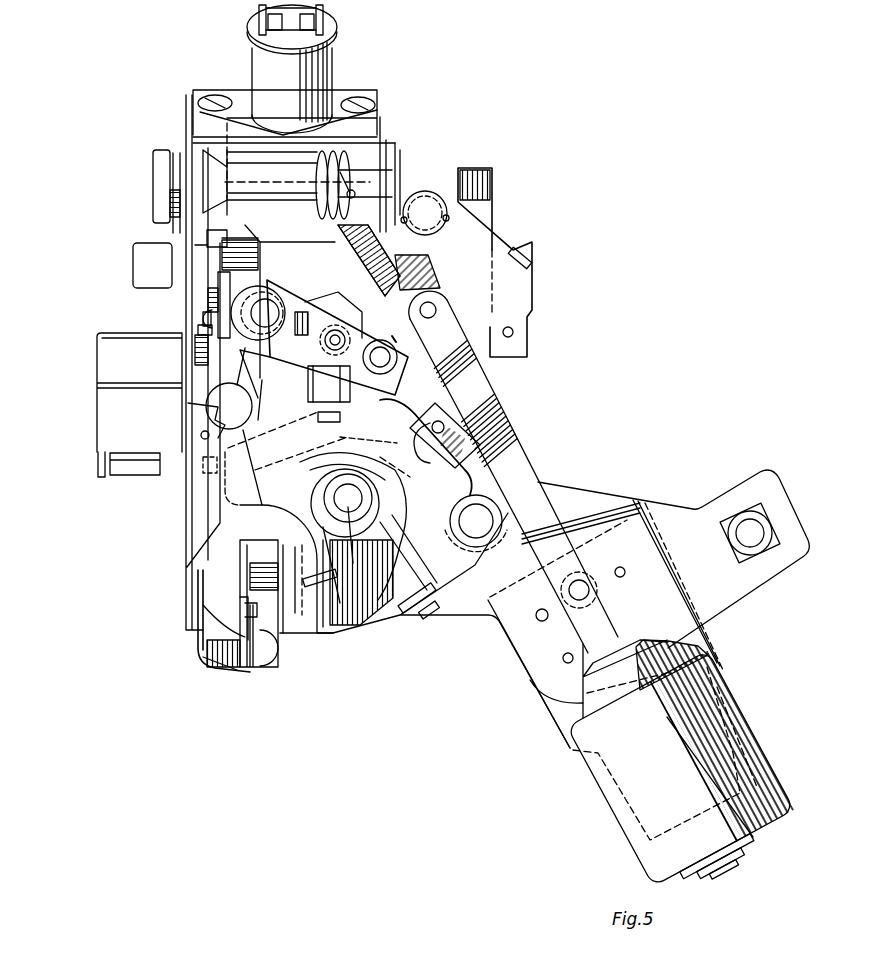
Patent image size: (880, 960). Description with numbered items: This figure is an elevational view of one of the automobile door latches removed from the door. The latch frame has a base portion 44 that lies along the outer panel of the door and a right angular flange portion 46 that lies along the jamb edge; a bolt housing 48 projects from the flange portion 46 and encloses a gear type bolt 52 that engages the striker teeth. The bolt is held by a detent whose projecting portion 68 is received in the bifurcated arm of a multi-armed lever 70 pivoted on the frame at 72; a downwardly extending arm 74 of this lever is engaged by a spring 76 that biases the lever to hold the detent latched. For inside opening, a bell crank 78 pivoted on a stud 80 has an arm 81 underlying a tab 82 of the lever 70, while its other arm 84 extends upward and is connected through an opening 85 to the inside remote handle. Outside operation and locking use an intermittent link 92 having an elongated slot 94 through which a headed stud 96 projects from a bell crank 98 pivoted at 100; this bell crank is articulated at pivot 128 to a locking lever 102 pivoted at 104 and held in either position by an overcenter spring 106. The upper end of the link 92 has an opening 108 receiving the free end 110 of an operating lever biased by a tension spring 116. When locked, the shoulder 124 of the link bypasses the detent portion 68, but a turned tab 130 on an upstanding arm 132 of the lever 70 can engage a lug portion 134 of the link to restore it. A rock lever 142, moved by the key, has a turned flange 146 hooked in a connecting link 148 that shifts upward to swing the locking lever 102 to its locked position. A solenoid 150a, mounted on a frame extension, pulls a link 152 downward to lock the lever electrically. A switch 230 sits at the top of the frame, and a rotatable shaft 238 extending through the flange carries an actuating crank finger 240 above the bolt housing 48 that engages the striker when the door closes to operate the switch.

The base portion 44 is at (480, 192).
The flange portion 46 is at (192, 318).
The bolt housing 48 is at (118, 410).
The gear type bolt 52 is at (137, 455).
The projecting portion of detent 68 is at (215, 475).
The multi-armed lever 70 is at (300, 522).
The lever pivot 72 is at (335, 555).
The downwardly extending arm 74 is at (325, 634).
The spring 76 is at (395, 618).
The bell crank 78 is at (505, 545).
The stud 80 is at (478, 548).
The bell crank arm 81 is at (432, 617).
The tab 82 is at (438, 510).
The upwardly extending bell crank arm 84 is at (434, 445).
The opening 85 is at (455, 428).
The intermittent link 92 is at (258, 268).
The elongated slot 94 is at (262, 392).
The headed stud 96 is at (195, 400).
The bell crank 98 is at (322, 285).
The bell crank pivot 100 is at (275, 312).
The locking lever 102 is at (520, 258).
The locking lever pivot 104 is at (392, 340).
The overcenter spring 106 is at (433, 195).
The opening 108 is at (215, 240).
The free end of operating lever 110 is at (192, 232).
The tension spring 116 is at (190, 336).
The shoulder 124 is at (195, 453).
The pivot 128 is at (352, 320).
The turned tab 130 is at (332, 430).
The upstanding arm 132 is at (350, 445).
The lug portion 134 is at (317, 387).
The rock lever 142 is at (200, 614).
The turned flange 146 is at (210, 668).
The connecting link 148 is at (385, 410).
The front door latch solenoid 150a is at (640, 836).
The link 152 is at (495, 396).
The switch 230 is at (275, 78).
The rotatable shaft 238 is at (215, 180).
The actuating crank finger 240 is at (165, 195).